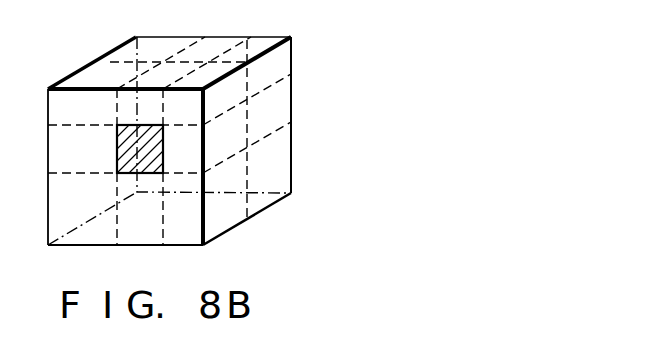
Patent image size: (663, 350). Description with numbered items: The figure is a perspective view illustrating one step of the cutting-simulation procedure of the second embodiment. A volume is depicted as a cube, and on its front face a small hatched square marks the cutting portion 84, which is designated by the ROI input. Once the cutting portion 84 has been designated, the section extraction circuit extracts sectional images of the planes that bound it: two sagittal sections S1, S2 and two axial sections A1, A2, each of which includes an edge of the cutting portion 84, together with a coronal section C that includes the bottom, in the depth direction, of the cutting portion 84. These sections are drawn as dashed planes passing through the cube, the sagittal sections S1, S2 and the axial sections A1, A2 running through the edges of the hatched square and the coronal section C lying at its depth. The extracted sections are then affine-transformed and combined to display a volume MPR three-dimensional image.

The coronal section C is at (112, 62).
The sagittal section S1 is at (242, 37).
The sagittal section S2 is at (182, 50).
The axial section A1 is at (293, 71).
The axial section A2 is at (293, 122).
The cutting portion 84 is at (163, 157).